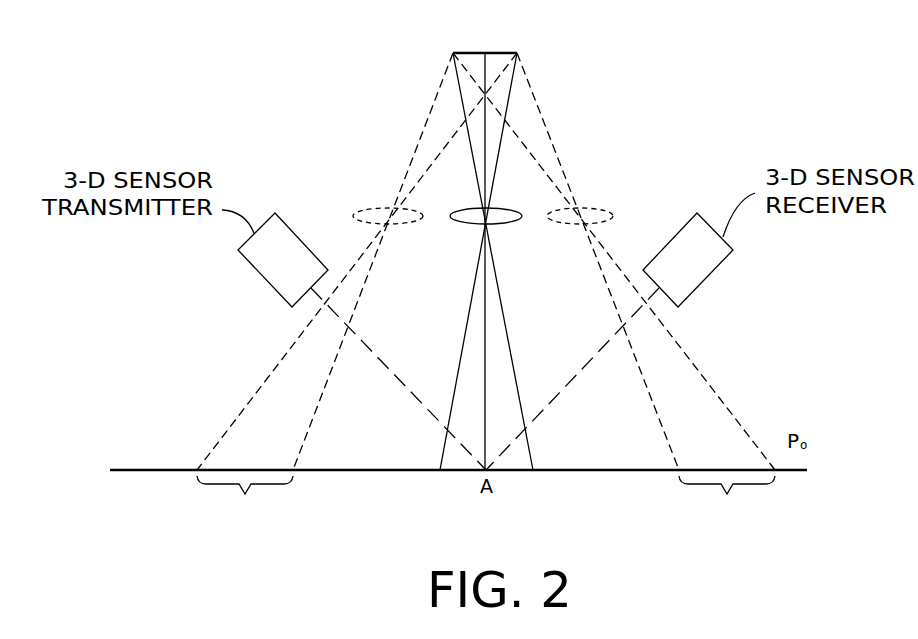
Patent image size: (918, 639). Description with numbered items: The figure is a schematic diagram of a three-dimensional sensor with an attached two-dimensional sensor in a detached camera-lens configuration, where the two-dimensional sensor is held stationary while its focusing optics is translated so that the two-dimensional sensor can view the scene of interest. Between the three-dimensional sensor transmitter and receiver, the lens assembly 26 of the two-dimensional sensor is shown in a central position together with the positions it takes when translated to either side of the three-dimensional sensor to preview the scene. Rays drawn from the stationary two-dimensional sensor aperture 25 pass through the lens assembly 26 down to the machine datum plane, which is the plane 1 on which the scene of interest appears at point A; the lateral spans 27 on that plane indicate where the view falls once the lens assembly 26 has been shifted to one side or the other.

The object plane / measurement surface 1 is at (795, 472).
The projected pattern / light source plane 25 is at (515, 50).
The lens assembly 26 is at (603, 212).
The image shift range on the plane 27 is at (486, 500).